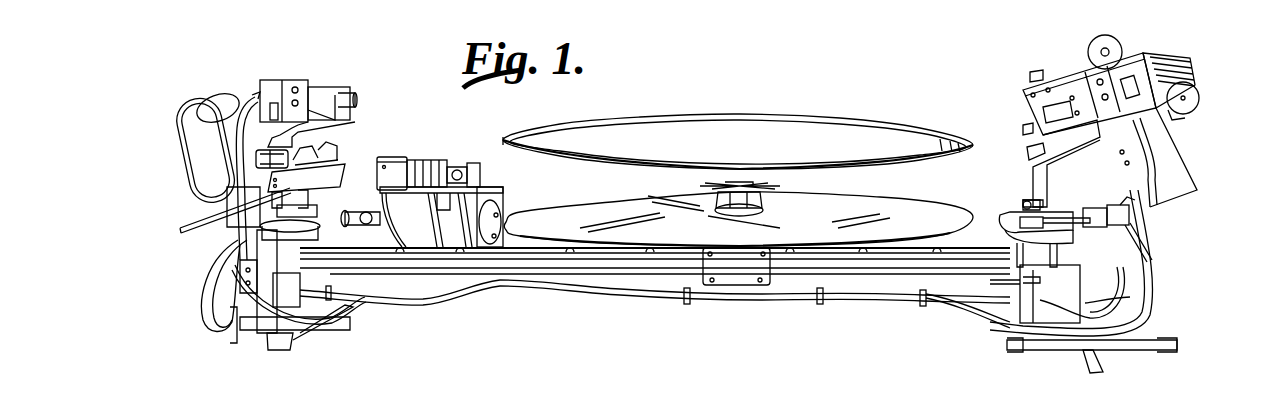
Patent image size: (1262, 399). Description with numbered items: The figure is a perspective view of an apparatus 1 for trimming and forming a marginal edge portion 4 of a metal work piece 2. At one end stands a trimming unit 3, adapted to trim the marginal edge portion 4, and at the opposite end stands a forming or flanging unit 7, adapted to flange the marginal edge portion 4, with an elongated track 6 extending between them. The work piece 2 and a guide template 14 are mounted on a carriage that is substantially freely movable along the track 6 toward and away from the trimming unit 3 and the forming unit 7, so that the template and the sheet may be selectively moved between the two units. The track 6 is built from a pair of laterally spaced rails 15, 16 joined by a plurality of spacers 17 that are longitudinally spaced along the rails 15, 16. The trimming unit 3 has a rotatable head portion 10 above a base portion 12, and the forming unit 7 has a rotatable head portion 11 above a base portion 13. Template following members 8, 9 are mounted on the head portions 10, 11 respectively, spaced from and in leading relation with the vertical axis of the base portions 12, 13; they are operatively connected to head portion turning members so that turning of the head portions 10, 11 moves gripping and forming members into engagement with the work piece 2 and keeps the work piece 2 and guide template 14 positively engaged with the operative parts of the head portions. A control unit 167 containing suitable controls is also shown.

The apparatus 1 is at (712, 94).
The work piece 2 is at (752, 128).
The trimming unit 3 is at (1198, 84).
The marginal edge portion 4 is at (882, 128).
The track 6 is at (622, 281).
The forming unit 7 is at (300, 76).
The template following member 8 is at (1060, 207).
The template following member 9 is at (304, 204).
The head portion 10 is at (1186, 166).
The head portion 11 is at (340, 88).
The base portion 12 is at (1130, 297).
The base portion 13 is at (222, 258).
The guide template 14 is at (918, 210).
The rail 15 is at (530, 268).
The rail 16 is at (492, 257).
The spacers 17 is at (575, 256).
The control unit 167 is at (460, 162).